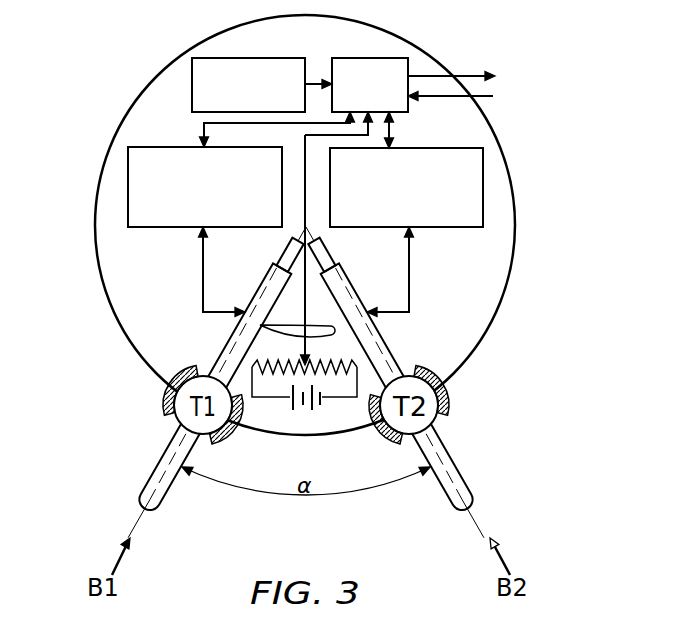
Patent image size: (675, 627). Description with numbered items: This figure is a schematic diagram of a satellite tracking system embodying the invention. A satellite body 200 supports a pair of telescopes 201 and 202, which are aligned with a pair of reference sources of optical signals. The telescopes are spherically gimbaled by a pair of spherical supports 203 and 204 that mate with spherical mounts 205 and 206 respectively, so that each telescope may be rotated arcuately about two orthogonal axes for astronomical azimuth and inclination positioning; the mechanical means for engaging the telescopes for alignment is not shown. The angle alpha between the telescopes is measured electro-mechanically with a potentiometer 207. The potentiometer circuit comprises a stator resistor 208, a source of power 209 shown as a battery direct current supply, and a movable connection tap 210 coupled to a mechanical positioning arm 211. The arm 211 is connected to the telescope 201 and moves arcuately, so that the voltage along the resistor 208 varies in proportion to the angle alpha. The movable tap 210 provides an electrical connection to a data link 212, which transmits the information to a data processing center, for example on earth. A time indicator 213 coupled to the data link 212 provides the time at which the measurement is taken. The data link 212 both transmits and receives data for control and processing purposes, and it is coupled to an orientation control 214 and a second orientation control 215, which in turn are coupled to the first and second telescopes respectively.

The satellite body 200 is at (495, 287).
The telescope 201 is at (176, 447).
The telescope 202 is at (457, 473).
The spherical support 203 is at (166, 399).
The spherical support 204 is at (450, 397).
The spherical mount 205 is at (202, 430).
The spherical mount 206 is at (410, 430).
The potentiometer 207 is at (297, 318).
The stator resistor 208 is at (343, 371).
The source of power 209 is at (295, 409).
The movable connection tap 210 is at (300, 352).
The mechanical positioning arm 211 is at (317, 331).
The data link 212 is at (390, 58).
The time indicator 213 is at (225, 58).
The orientation control 214 is at (128, 183).
The second orientation control 215 is at (483, 176).